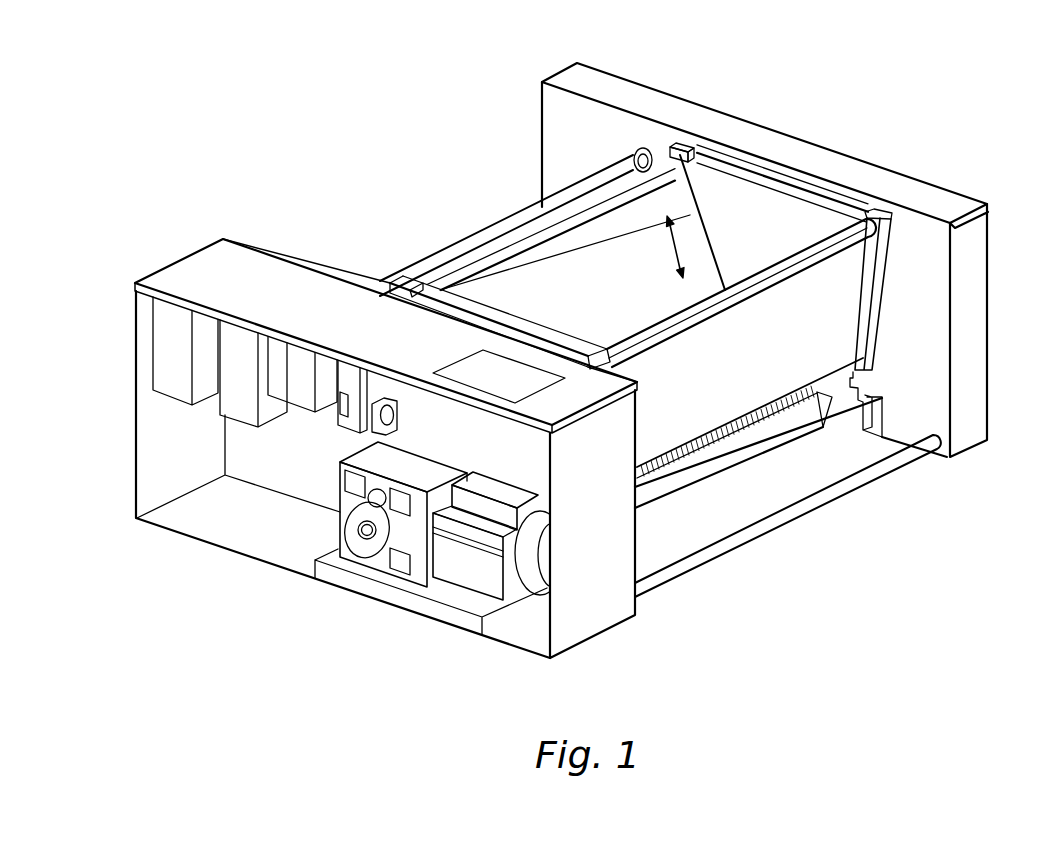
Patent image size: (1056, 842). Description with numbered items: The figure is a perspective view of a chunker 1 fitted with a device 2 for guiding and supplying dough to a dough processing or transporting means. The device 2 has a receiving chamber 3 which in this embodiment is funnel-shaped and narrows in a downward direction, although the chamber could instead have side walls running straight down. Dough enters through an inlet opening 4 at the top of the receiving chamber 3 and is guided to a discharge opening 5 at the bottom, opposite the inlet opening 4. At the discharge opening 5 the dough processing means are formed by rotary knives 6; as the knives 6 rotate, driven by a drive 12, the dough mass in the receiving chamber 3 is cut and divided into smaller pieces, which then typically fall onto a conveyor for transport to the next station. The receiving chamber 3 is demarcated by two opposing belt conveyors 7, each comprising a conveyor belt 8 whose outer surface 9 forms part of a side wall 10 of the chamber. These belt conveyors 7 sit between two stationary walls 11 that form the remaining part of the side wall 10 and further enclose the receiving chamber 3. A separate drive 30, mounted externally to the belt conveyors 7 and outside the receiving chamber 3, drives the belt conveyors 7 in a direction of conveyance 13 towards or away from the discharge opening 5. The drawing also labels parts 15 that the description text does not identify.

The chunker 1 is at (305, 148).
The device for guiding and supplying dough 2 is at (902, 314).
The receiving chamber 3 is at (625, 247).
The inlet opening 4 is at (760, 270).
The discharge opening 5 is at (683, 483).
The rotary knives 6 is at (730, 432).
The belt conveyors 7 is at (553, 293).
The conveyor belt 8 is at (790, 400).
The outer surface 9 is at (615, 296).
The side wall 10 is at (790, 242).
The stationary walls 11 is at (493, 300).
The drive 12 is at (475, 558).
The direction of conveyance 13 is at (678, 247).
The holder 15 is at (682, 146).
The drive 30 is at (350, 407).